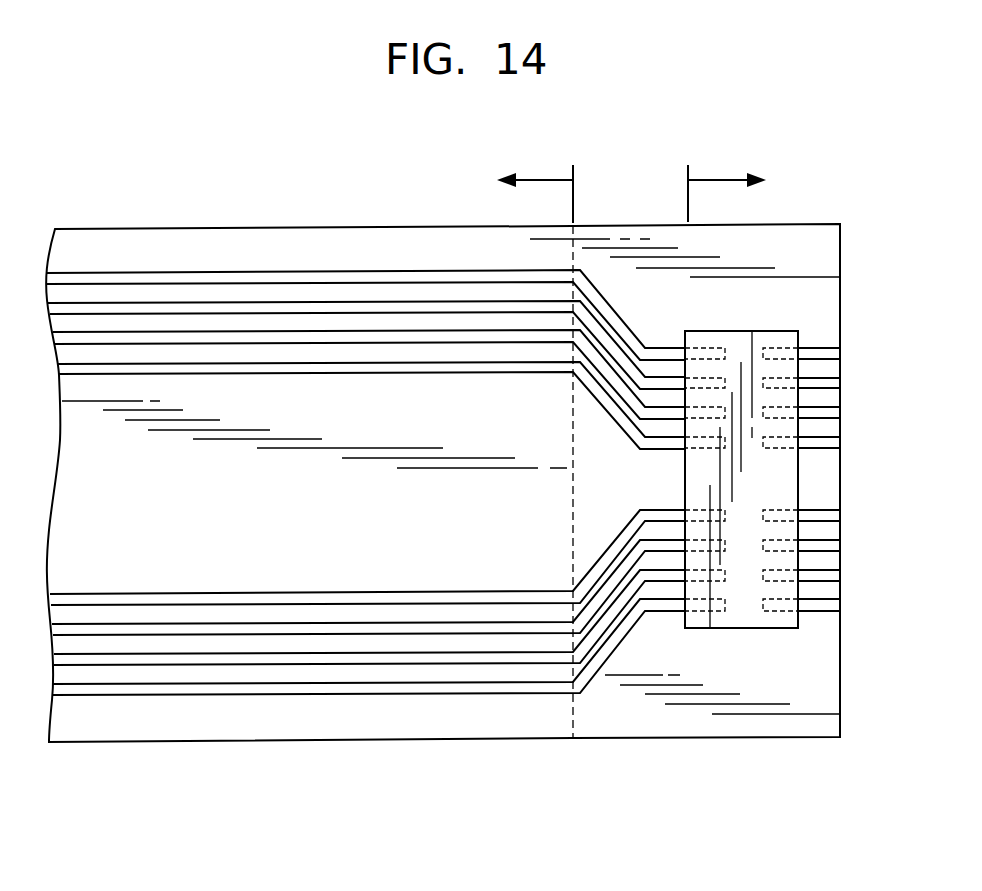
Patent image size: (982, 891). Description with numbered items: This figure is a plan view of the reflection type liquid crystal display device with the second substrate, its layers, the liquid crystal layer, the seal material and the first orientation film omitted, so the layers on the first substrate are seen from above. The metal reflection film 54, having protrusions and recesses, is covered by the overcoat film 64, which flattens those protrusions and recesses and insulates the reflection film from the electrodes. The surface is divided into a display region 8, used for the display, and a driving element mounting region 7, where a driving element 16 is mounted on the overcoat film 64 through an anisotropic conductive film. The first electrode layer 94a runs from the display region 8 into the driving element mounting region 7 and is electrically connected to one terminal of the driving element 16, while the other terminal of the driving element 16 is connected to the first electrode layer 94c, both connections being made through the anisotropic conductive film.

The metal reflection film 54 is at (167, 720).
The overcoat film 64 is at (818, 667).
The first electrode layer 94a is at (610, 317).
The first electrode layer 94c is at (836, 443).
The driving element 16 is at (750, 322).
The display region 8 is at (542, 178).
The driving element mounting region 7 is at (716, 178).